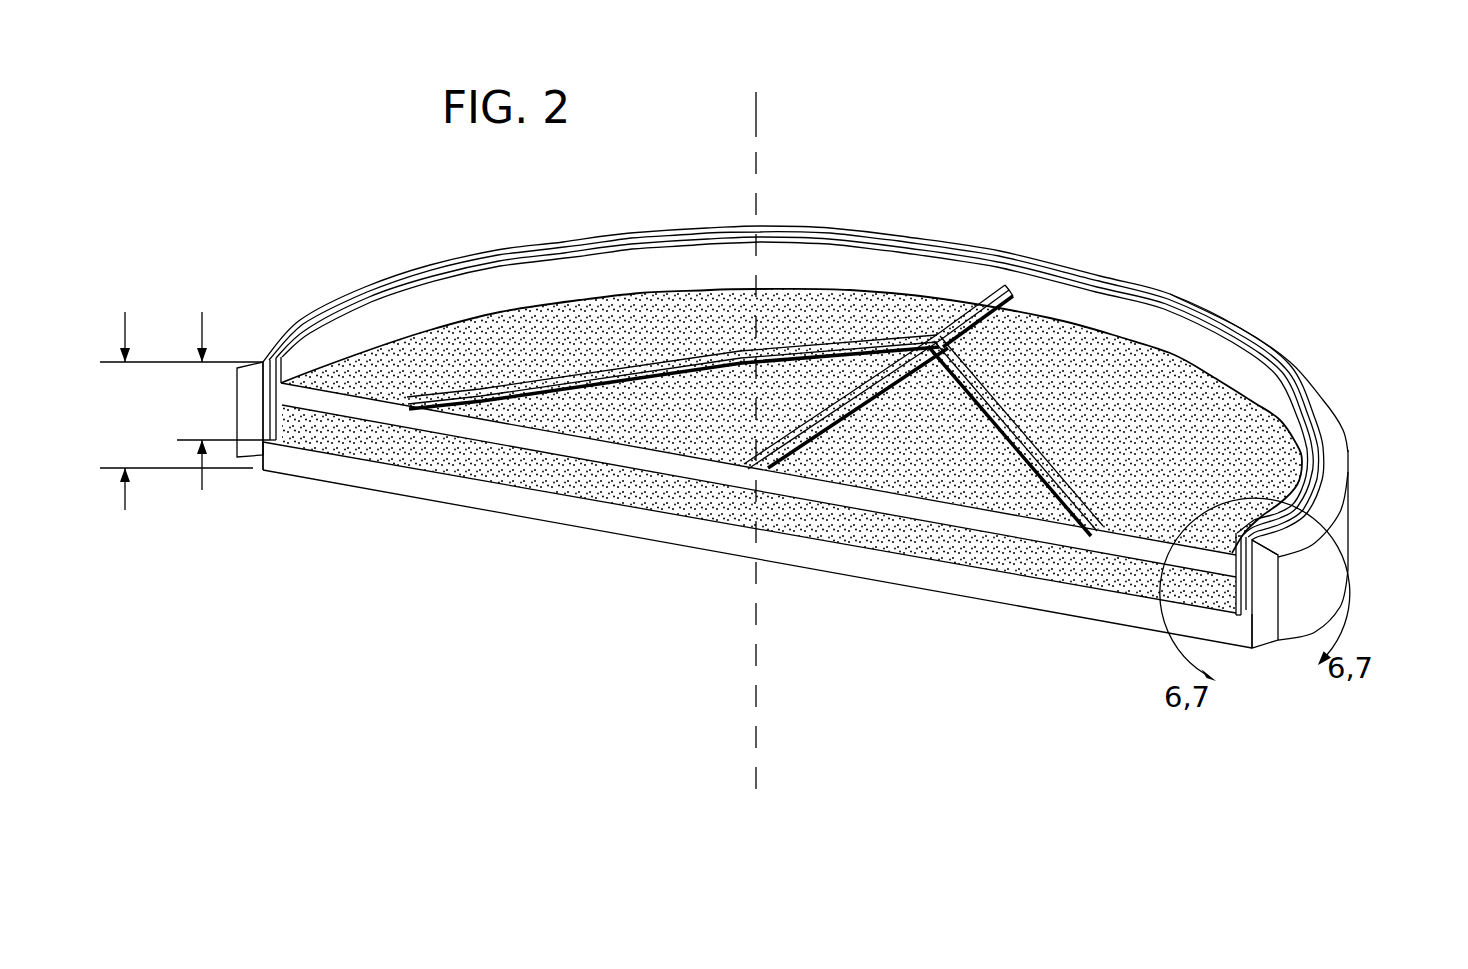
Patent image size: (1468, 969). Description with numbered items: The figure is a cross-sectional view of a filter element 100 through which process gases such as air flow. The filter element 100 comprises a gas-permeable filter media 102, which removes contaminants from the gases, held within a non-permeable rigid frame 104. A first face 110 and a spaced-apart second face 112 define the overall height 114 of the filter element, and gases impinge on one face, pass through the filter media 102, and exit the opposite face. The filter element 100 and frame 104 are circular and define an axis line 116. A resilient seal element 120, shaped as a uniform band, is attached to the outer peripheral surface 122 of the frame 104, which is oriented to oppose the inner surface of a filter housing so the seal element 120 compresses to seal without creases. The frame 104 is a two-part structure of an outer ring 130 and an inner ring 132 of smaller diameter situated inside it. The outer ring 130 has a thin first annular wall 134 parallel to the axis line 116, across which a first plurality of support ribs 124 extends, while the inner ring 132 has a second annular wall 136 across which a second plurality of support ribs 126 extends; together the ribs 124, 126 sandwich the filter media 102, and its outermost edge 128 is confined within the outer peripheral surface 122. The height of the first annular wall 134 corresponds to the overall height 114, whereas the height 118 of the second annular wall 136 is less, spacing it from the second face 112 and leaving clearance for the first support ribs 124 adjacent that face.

The filter element 100 is at (318, 168).
The filter media 102 is at (632, 320).
The rigid frame 104 is at (1128, 305).
The first face 110 is at (828, 183).
The second face 112 is at (856, 622).
The overall height 114 is at (179, 411).
The axis line 116 is at (756, 137).
The height of the second annular wall 118 is at (221, 401).
The resilient seal element 120 is at (1263, 627).
The outer peripheral surface 122 is at (1270, 530).
The first plurality of support ribs 124 is at (977, 594).
The second plurality of support ribs 126 is at (1005, 290).
The edge of the filter media 128 is at (1243, 625).
The outer ring 130 is at (337, 307).
The inner ring 132 is at (408, 313).
The first annular wall 134 is at (267, 360).
The second annular wall 136 is at (310, 330).